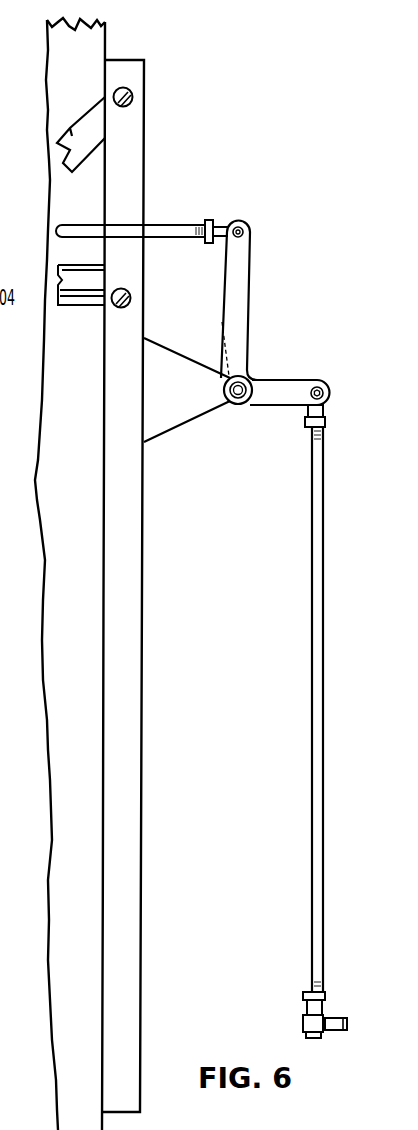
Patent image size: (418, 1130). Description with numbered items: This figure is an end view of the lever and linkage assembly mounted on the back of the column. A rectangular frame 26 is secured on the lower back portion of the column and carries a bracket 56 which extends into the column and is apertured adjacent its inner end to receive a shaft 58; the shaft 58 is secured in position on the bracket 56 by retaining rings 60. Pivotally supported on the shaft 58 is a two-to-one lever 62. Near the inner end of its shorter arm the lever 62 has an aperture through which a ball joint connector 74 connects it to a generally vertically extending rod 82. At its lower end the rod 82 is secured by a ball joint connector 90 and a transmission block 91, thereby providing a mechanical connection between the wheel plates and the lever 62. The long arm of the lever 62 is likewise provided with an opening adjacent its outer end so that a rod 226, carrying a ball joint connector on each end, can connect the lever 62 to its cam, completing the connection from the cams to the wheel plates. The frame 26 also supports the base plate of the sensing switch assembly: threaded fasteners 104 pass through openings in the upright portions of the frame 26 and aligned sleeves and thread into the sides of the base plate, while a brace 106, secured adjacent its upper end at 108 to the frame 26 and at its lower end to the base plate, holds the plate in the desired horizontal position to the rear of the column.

The rectangular frame 26 is at (133, 1043).
The bracket 56 is at (183, 417).
The shaft 58 is at (226, 392).
The retaining ring 60 is at (247, 382).
The lever 62 is at (240, 272).
The ball joint connector 74 is at (306, 422).
The generally vertically extending rod 82 is at (316, 465).
The ball joint connector 90 is at (306, 1007).
The transmission block 91 is at (337, 1013).
The threaded fastener 104 is at (131, 298).
The brace 106 is at (70, 131).
The upper brace attachment 108 is at (129, 104).
The rod 226 is at (178, 226).